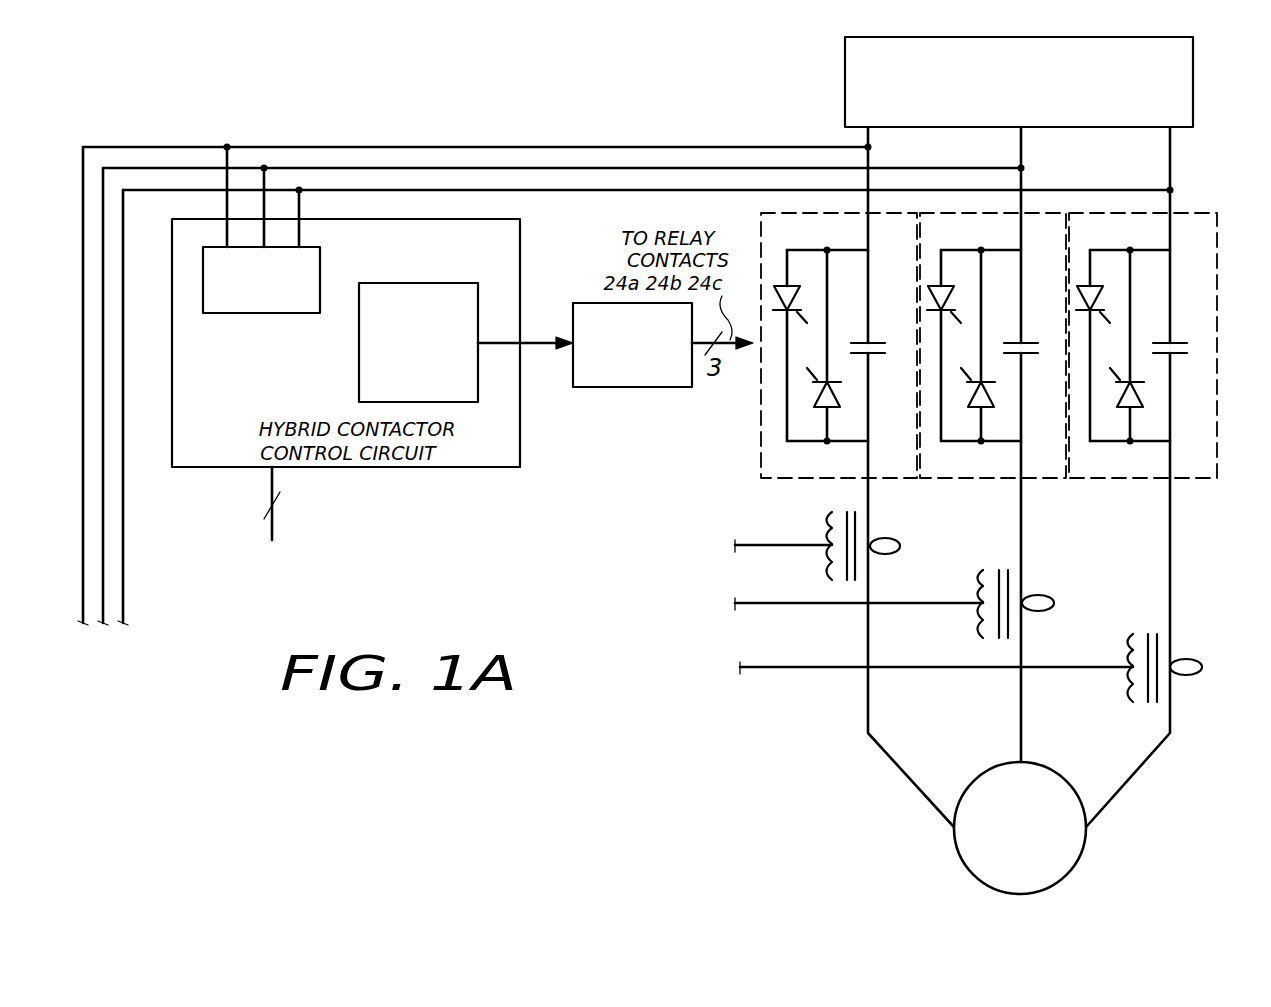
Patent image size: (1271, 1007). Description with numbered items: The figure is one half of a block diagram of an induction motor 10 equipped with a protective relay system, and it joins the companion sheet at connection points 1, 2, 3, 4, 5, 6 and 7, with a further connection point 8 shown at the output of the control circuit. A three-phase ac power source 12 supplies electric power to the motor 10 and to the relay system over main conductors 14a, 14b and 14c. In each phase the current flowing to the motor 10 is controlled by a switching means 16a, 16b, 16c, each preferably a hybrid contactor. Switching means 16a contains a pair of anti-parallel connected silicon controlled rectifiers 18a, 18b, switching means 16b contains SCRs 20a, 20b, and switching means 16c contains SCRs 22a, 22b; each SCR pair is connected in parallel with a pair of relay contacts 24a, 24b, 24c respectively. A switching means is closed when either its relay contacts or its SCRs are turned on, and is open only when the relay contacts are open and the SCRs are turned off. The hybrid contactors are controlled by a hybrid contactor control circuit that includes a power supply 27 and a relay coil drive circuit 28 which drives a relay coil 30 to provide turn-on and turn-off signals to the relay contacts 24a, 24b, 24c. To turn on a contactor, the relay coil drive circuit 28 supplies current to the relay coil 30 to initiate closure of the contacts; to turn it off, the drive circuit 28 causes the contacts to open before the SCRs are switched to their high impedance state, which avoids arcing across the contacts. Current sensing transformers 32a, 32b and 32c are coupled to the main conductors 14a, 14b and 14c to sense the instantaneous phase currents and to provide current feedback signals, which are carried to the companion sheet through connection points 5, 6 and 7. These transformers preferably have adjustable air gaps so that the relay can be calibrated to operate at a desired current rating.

The connection point 1 is at (83, 623).
The connection point 2 is at (103, 623).
The connection point 3 is at (123, 623).
The connection point 4 is at (272, 540).
The connection point 5 is at (735, 547).
The connection point 6 is at (735, 604).
The connection point 7 is at (740, 667).
The multi-conductor line 8 is at (283, 506).
The induction motor 10 is at (1087, 843).
The ac power source 12 is at (845, 91).
The main conductor 14a is at (870, 703).
The main conductor 14b is at (1023, 703).
The main conductor 14c is at (1172, 585).
The switching means 16a is at (819, 481).
The switching means 16b is at (971, 481).
The switching means 16c is at (1121, 481).
The silicon controlled rectifier 18a is at (780, 284).
The silicon controlled rectifier 18b is at (820, 408).
The silicon controlled rectifier 20a is at (934, 284).
The silicon controlled rectifier 20b is at (974, 408).
The silicon controlled rectifier 22a is at (1083, 284).
The silicon controlled rectifier 22b is at (1123, 408).
The relay contacts 24a is at (880, 355).
The relay contacts 24b is at (1032, 340).
The relay contacts 24c is at (1181, 340).
The power supply 27 is at (321, 258).
The relay coil drive circuit 28 is at (359, 354).
The relay coil 30 is at (610, 389).
The current sensing transformer 32a is at (870, 558).
The current sensing transformer 32b is at (1023, 614).
The current sensing transformer 32c is at (1172, 680).